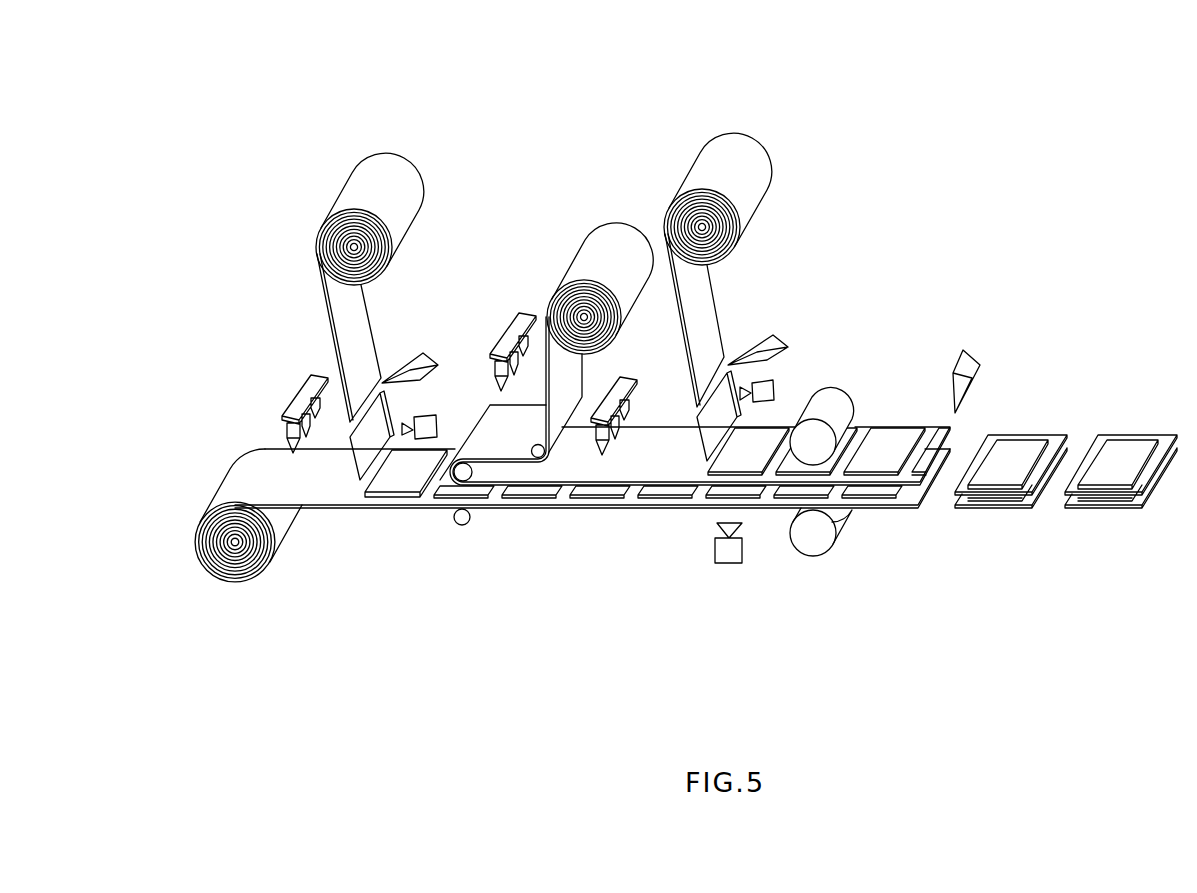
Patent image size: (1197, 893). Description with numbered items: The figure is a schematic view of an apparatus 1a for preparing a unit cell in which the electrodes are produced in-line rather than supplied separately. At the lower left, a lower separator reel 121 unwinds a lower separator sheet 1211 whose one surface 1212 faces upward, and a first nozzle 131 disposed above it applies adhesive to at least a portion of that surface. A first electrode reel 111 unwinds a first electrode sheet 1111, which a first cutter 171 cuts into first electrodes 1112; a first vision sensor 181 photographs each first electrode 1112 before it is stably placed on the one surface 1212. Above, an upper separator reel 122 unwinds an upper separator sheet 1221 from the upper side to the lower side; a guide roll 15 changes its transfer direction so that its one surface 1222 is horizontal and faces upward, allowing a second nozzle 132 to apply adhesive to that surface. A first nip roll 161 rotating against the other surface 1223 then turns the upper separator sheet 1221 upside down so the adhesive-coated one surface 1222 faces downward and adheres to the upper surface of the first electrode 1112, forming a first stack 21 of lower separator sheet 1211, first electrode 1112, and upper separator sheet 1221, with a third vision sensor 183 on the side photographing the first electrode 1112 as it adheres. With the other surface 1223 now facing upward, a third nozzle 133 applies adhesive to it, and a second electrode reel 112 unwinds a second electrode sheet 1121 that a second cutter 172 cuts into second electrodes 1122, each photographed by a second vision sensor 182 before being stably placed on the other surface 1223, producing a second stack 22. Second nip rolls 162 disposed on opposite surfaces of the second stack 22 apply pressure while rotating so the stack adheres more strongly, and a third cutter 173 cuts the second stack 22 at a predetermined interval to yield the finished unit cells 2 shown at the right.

The apparatus for preparing a unit cell 1a is at (889, 101).
The first electrode reel 111 is at (372, 177).
The first electrode sheet 1111 is at (349, 338).
The first electrode 1112 is at (395, 483).
The second electrode reel 112 is at (720, 157).
The second electrode sheet 1121 is at (707, 305).
The second electrode 1122 is at (742, 463).
The lower separator reel 121 is at (235, 582).
The lower separator sheet 1211 is at (325, 505).
The one surface of the lower separator sheet 1212 is at (272, 467).
The upper separator reel 122 is at (595, 242).
The upper separator sheet 1221 is at (573, 373).
The one surface of the upper separator sheet 1222 is at (498, 412).
The other surface of the upper separator sheet 1223 is at (573, 468).
The first nozzle 131 is at (303, 388).
The second nozzle 132 is at (515, 328).
The third nozzle 133 is at (620, 407).
The guide roll 15 is at (530, 452).
The first nip roll 161 is at (473, 477).
The second nip roll 162 is at (820, 540).
The first cutter 171 is at (423, 353).
The second cutter 172 is at (780, 340).
The third cutter 173 is at (962, 350).
The first vision sensor 181 is at (424, 438).
The second vision sensor 182 is at (760, 403).
The third vision sensor 183 is at (713, 546).
The unit cell 2 is at (1107, 505).
The first stack 21 is at (661, 417).
The second stack 22 is at (795, 389).